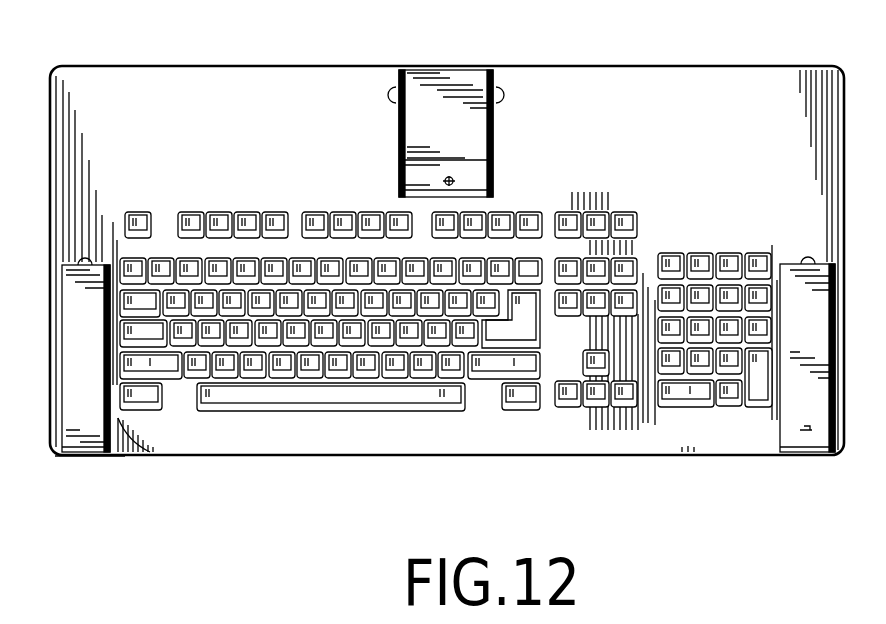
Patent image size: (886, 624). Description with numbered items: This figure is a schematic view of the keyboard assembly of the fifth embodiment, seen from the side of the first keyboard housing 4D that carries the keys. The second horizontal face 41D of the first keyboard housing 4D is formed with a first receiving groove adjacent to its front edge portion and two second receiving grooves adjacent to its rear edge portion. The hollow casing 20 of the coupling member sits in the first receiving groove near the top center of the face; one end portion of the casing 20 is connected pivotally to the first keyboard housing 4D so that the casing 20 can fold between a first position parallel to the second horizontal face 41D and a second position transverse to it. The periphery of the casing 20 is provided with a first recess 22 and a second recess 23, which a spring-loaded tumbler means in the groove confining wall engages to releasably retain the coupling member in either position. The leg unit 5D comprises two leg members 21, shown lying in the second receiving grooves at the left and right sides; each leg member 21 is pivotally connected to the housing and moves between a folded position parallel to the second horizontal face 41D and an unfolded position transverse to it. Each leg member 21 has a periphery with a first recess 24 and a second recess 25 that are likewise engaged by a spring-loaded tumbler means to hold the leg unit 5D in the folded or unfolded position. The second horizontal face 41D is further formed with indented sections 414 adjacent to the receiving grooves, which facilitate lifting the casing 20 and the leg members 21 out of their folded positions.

The first keyboard housing 4D is at (52, 74).
The indented sections 414 is at (395, 92).
The hollow casing 20 is at (458, 88).
The second horizontal face 41D is at (688, 135).
The second recess 23 is at (444, 178).
The first recess 22 is at (398, 182).
The leg members 21 is at (67, 336).
The first recess 24 is at (88, 460).
The second recess 25 is at (120, 432).
The leg unit 5D is at (69, 468).